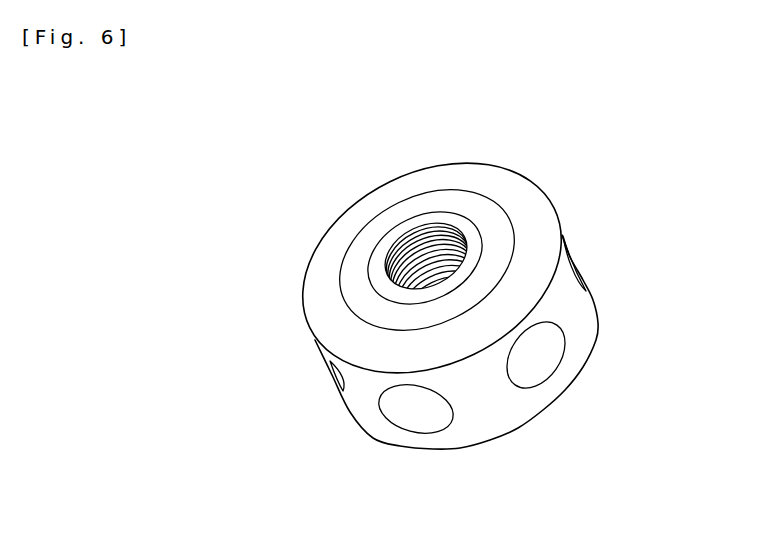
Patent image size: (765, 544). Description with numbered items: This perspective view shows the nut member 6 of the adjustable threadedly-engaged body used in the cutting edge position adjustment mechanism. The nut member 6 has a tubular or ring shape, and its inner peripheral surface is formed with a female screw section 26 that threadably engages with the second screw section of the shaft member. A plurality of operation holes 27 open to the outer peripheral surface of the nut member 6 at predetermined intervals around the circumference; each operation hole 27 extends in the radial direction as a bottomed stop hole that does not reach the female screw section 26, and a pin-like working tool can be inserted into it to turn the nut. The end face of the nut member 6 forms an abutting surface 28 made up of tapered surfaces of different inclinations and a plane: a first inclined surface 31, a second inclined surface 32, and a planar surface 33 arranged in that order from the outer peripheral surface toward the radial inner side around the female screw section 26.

The nut member 6 is at (573, 152).
The female screw section 26 is at (430, 239).
The operation hole 27 is at (548, 340).
The abutting surface 28 is at (517, 200).
The first inclined surface 31 is at (322, 299).
The second inclined surface 32 is at (358, 260).
The planar surface 33 is at (393, 239).